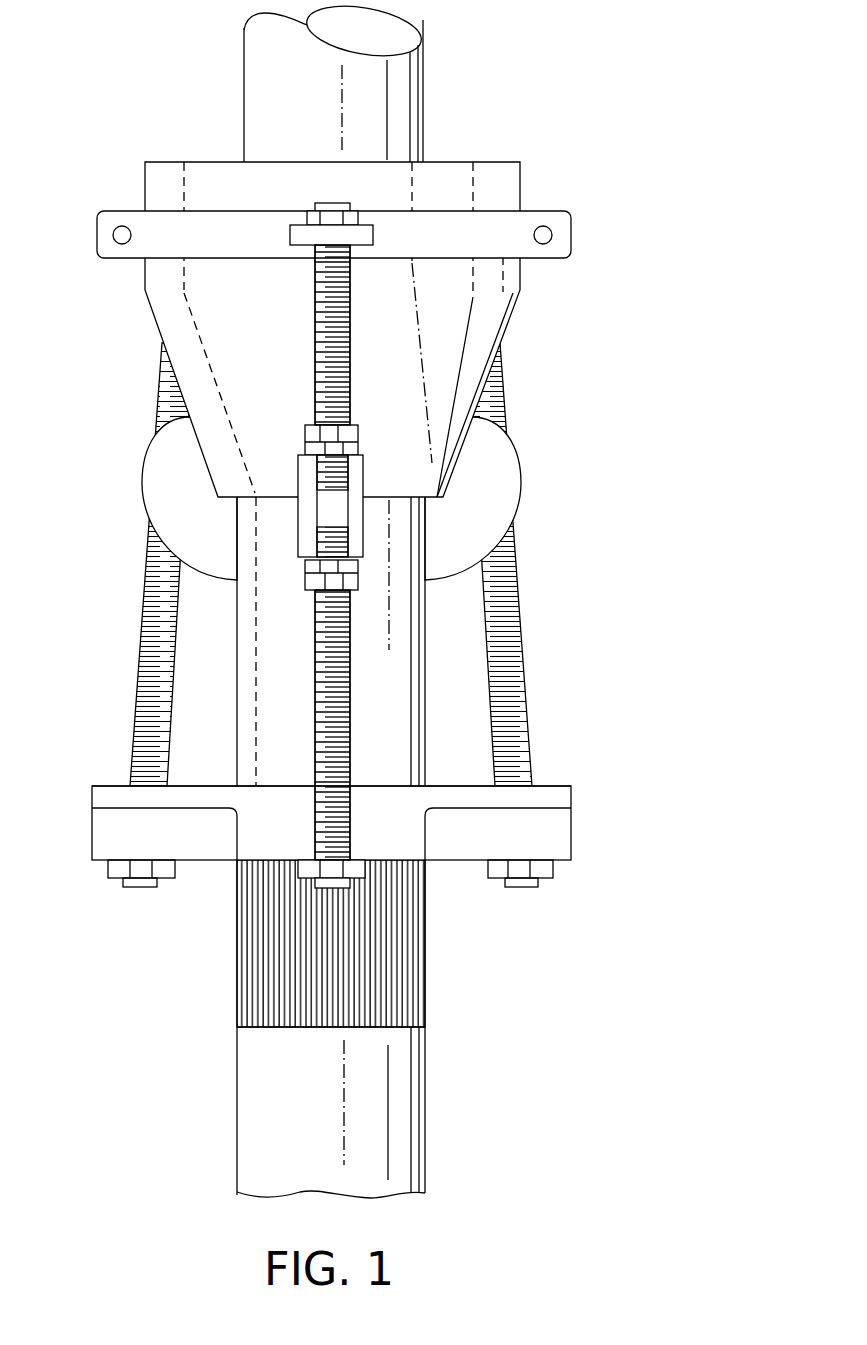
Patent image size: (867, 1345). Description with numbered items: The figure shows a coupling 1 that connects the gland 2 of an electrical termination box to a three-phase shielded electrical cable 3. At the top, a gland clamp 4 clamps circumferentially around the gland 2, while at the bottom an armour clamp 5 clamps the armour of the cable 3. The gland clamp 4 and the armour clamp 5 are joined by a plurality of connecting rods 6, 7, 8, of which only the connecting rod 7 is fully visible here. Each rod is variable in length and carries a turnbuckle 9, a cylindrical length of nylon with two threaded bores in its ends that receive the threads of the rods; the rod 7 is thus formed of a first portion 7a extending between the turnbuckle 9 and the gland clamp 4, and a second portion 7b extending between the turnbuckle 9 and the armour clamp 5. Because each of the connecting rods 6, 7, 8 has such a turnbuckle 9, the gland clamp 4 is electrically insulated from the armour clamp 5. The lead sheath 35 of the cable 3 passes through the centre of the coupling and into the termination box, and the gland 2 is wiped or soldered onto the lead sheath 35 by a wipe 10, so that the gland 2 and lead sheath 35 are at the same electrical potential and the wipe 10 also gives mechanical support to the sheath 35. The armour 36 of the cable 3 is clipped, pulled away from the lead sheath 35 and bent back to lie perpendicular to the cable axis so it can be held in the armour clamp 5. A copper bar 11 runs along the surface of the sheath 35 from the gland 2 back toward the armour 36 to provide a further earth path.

The coupling 1 is at (652, 805).
The gland 2 is at (508, 328).
The shielded electrical cable 3 is at (425, 1100).
The gland clamp 4 is at (437, 260).
The armour clamp 5 is at (92, 828).
The connecting rod 6 is at (520, 598).
The connecting rod 7 is at (348, 718).
The first portion 7a is at (340, 360).
The second portion 7b is at (337, 757).
The connecting rod 8 is at (135, 707).
The turnbuckle 9 is at (370, 530).
The wipe 10 is at (503, 478).
The copper bar 11 is at (185, 300).
The lead sheath 35 is at (397, 660).
The armour 36 is at (548, 808).